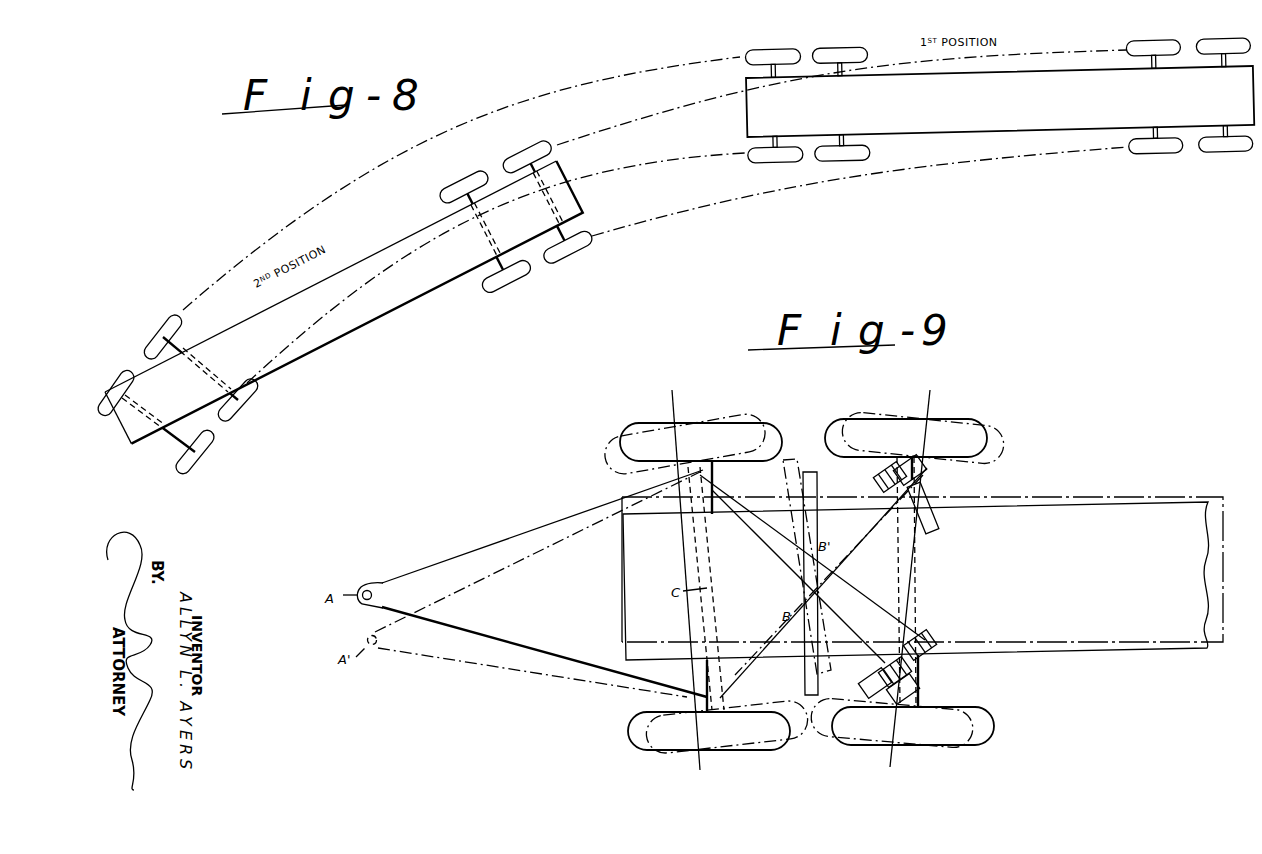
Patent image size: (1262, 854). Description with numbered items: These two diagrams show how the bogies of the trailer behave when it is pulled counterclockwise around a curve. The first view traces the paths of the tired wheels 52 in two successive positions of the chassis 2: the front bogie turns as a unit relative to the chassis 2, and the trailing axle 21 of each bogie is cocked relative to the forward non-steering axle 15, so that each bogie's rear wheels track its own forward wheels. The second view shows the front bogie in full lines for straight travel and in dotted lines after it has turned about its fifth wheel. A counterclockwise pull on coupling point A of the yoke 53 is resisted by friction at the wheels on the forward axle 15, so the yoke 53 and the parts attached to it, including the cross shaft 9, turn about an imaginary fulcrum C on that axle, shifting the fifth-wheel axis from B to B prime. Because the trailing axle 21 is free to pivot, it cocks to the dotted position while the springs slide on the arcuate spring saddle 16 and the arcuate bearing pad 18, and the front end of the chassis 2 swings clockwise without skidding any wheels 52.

In FIG. 8, the chassis 2 is at (1002, 107).
In FIG. 9, the chassis 2 is at (1014, 583).
In FIG. 9, the cross shaft 9 is at (812, 480).
In FIG. 8, the forward non-steering axle 15 is at (767, 70).
In FIG. 9, the forward non-steering axle 15 is at (703, 668).
In FIG. 9, the arcuate spring saddle or pad 16 is at (918, 677).
In FIG. 9, the arcuate bearing pad 18 is at (883, 470).
In FIG. 8, the trailing axle 21 is at (1224, 60).
In FIG. 9, the trailing axle 21 is at (918, 697).
In FIG. 8, the tired wheels 52 is at (827, 157).
In FIG. 9, the tired wheels 52 is at (767, 424).
In FIG. 9, the yoke 53 is at (392, 570).